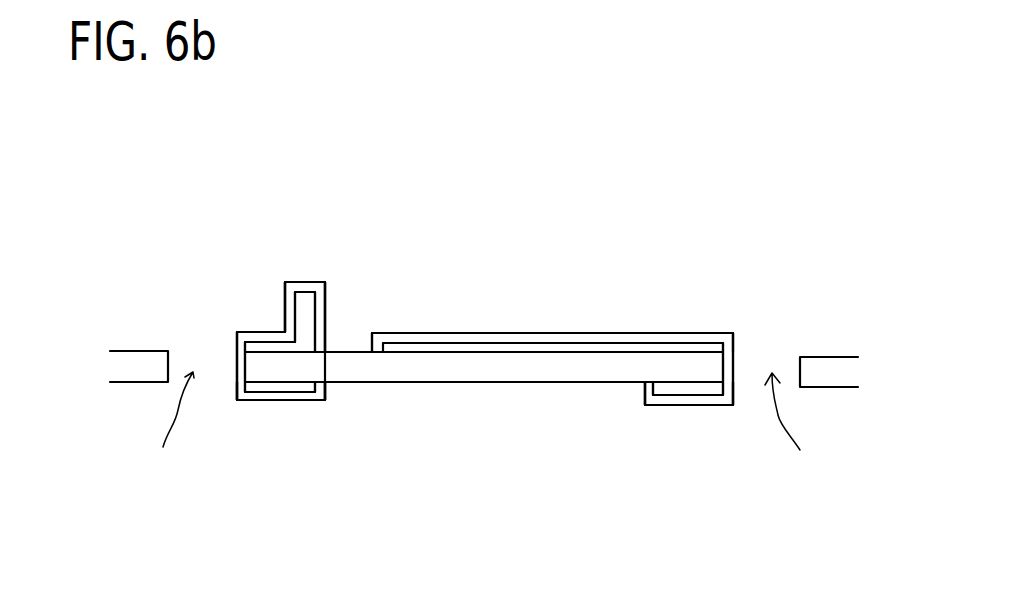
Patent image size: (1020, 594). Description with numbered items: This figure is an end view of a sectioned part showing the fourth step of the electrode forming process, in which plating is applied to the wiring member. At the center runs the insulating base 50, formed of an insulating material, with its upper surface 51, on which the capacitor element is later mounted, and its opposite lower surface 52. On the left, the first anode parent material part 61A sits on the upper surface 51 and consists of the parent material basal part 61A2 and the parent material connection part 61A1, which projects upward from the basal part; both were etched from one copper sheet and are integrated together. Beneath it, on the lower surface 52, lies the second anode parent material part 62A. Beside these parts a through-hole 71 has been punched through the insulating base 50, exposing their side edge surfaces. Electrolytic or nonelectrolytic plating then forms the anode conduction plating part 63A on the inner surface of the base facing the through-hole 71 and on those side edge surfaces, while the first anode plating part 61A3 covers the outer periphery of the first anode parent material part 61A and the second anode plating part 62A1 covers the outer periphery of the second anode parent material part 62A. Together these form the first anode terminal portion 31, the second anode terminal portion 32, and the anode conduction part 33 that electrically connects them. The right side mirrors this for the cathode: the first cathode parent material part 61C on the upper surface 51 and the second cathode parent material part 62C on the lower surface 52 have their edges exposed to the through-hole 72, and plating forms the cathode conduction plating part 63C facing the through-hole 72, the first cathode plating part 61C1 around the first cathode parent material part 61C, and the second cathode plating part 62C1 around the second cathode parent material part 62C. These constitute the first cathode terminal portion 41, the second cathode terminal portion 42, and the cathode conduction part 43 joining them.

The first anode terminal portion 31 is at (192, 138).
The second anode terminal portion 32 is at (340, 483).
The anode conduction part 33 is at (281, 341).
The first cathode terminal portion 41 is at (552, 195).
The second cathode terminal portion 42 is at (758, 487).
The cathode conduction part 43 is at (552, 369).
The insulating base 50 is at (508, 373).
The upper surface 51 is at (340, 352).
The lower surface 52 is at (412, 382).
The first anode parent material part 61A is at (138, 190).
The parent material connection part 61A1 is at (302, 310).
The parent material basal part 61A2 is at (265, 343).
The first anode plating part 61A3 is at (307, 287).
The second anode parent material part 62A is at (293, 388).
The second anode plating part 62A1 is at (260, 395).
The anode conduction plating part 63A is at (243, 367).
The first cathode parent material part 61C is at (623, 350).
The first cathode plating part 61C1 is at (688, 340).
The second cathode parent material part 62C is at (675, 392).
The second cathode plating part 62C1 is at (705, 400).
The cathode conduction plating part 63C is at (733, 365).
The through-hole 71 is at (152, 416).
The through-hole 72 is at (811, 421).